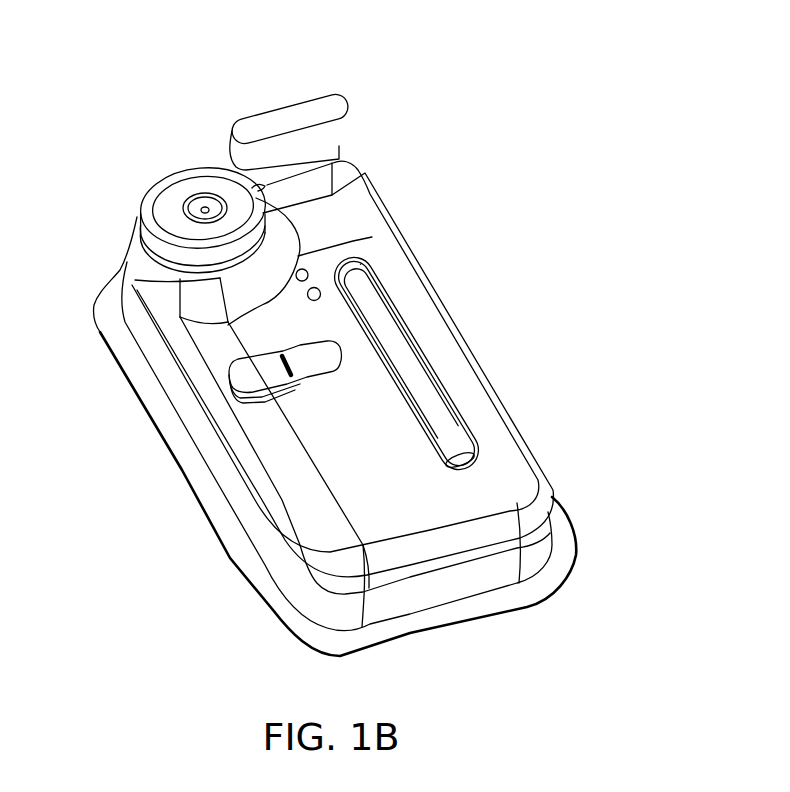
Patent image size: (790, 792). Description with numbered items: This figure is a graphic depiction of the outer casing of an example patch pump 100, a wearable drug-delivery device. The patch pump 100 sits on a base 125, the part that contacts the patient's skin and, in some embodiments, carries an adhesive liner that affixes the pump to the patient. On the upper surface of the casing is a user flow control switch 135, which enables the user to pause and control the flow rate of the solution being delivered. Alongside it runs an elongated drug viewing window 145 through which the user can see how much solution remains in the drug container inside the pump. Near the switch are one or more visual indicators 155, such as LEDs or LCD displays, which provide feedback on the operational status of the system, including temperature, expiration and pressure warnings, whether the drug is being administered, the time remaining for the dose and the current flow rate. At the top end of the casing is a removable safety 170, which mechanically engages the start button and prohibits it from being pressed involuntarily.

The patch pump 100 is at (385, 502).
The base 125 is at (577, 553).
The user flow control switch 135 is at (236, 359).
The drug viewing window 145 is at (413, 385).
The visual indicators 155 is at (318, 288).
The removable safety 170 is at (283, 105).